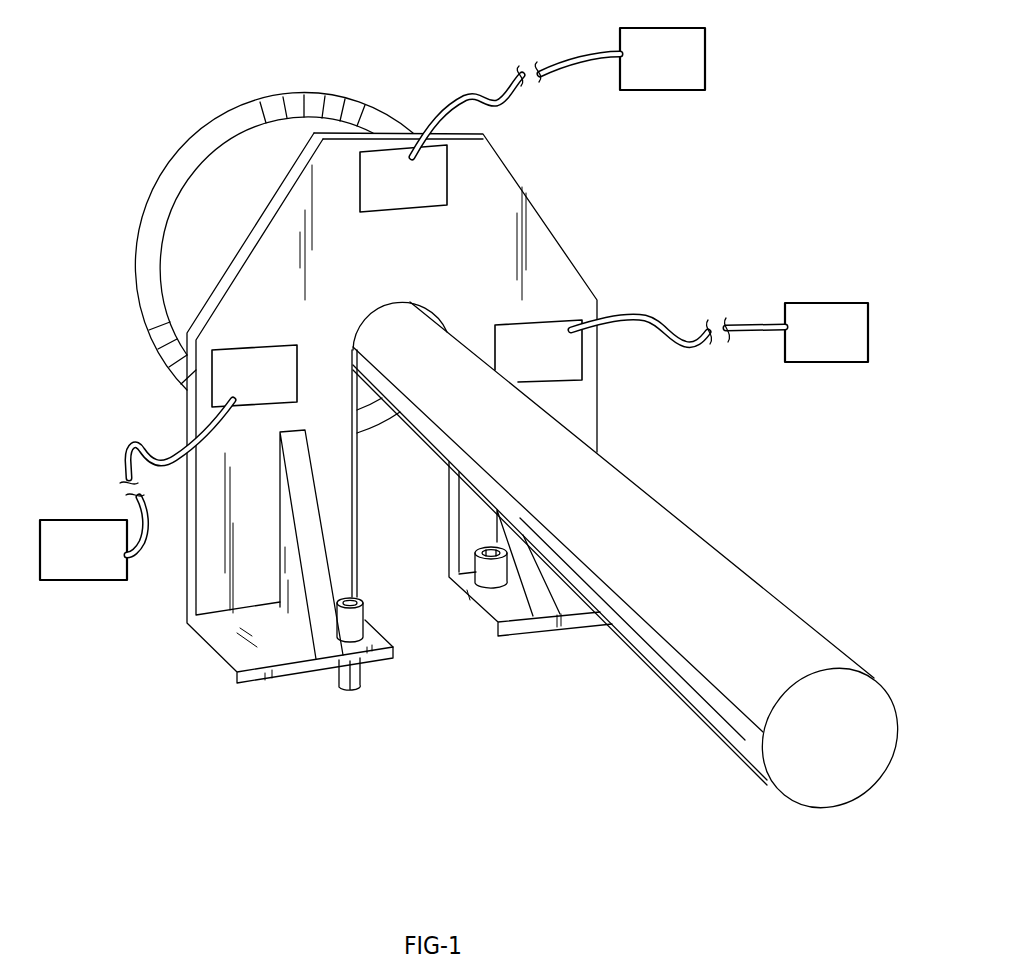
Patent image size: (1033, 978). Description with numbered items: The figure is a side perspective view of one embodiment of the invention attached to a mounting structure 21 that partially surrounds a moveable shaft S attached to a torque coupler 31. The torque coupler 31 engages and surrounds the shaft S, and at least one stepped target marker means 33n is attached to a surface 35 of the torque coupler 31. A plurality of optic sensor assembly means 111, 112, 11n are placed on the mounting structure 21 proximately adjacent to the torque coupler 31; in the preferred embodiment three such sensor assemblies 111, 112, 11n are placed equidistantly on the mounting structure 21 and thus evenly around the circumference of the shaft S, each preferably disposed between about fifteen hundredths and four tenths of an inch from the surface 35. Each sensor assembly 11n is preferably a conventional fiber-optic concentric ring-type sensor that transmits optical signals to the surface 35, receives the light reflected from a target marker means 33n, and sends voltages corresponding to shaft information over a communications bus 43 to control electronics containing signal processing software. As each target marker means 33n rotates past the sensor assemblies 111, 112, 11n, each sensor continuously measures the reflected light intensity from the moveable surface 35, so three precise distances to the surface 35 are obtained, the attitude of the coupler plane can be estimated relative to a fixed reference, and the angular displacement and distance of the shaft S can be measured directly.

The mounting structure 21 is at (548, 218).
The torque coupler 31 is at (241, 230).
The stepped target marker means 33n is at (295, 102).
The surface 35 is at (157, 205).
The moveable shaft S is at (795, 582).
The optic sensor assembly means 11n is at (403, 178).
The optic sensor assembly means 111 is at (254, 376).
The optic sensor assembly means 112 is at (538, 351).
The communications bus 43 is at (470, 93).